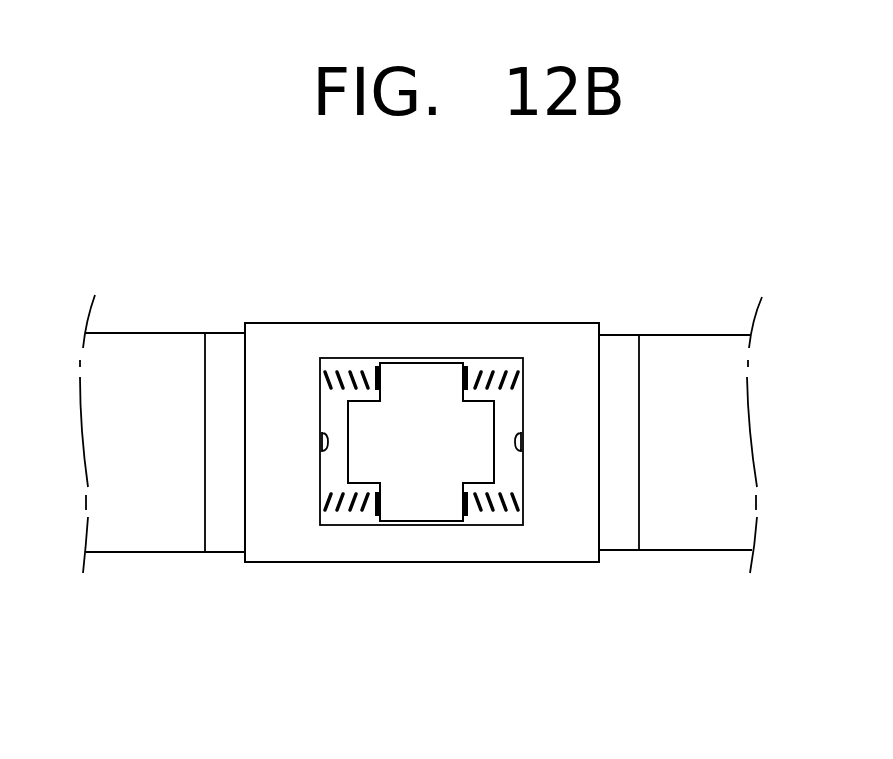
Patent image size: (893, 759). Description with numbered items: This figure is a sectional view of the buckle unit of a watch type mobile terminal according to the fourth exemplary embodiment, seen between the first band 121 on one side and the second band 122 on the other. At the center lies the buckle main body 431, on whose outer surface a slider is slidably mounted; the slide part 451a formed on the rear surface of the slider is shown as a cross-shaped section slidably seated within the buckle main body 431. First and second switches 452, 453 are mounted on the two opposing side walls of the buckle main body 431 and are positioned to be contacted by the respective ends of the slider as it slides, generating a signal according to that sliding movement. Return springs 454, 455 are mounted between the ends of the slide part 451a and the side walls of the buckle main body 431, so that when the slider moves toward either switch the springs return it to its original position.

The first band 121 is at (692, 520).
The second band 122 is at (146, 520).
The buckle main body 431 is at (573, 528).
The slide part 451a is at (419, 468).
The first switch 452 is at (328, 441).
The second switch 453 is at (515, 441).
The return spring 454 is at (329, 375).
The return spring 455 is at (514, 375).